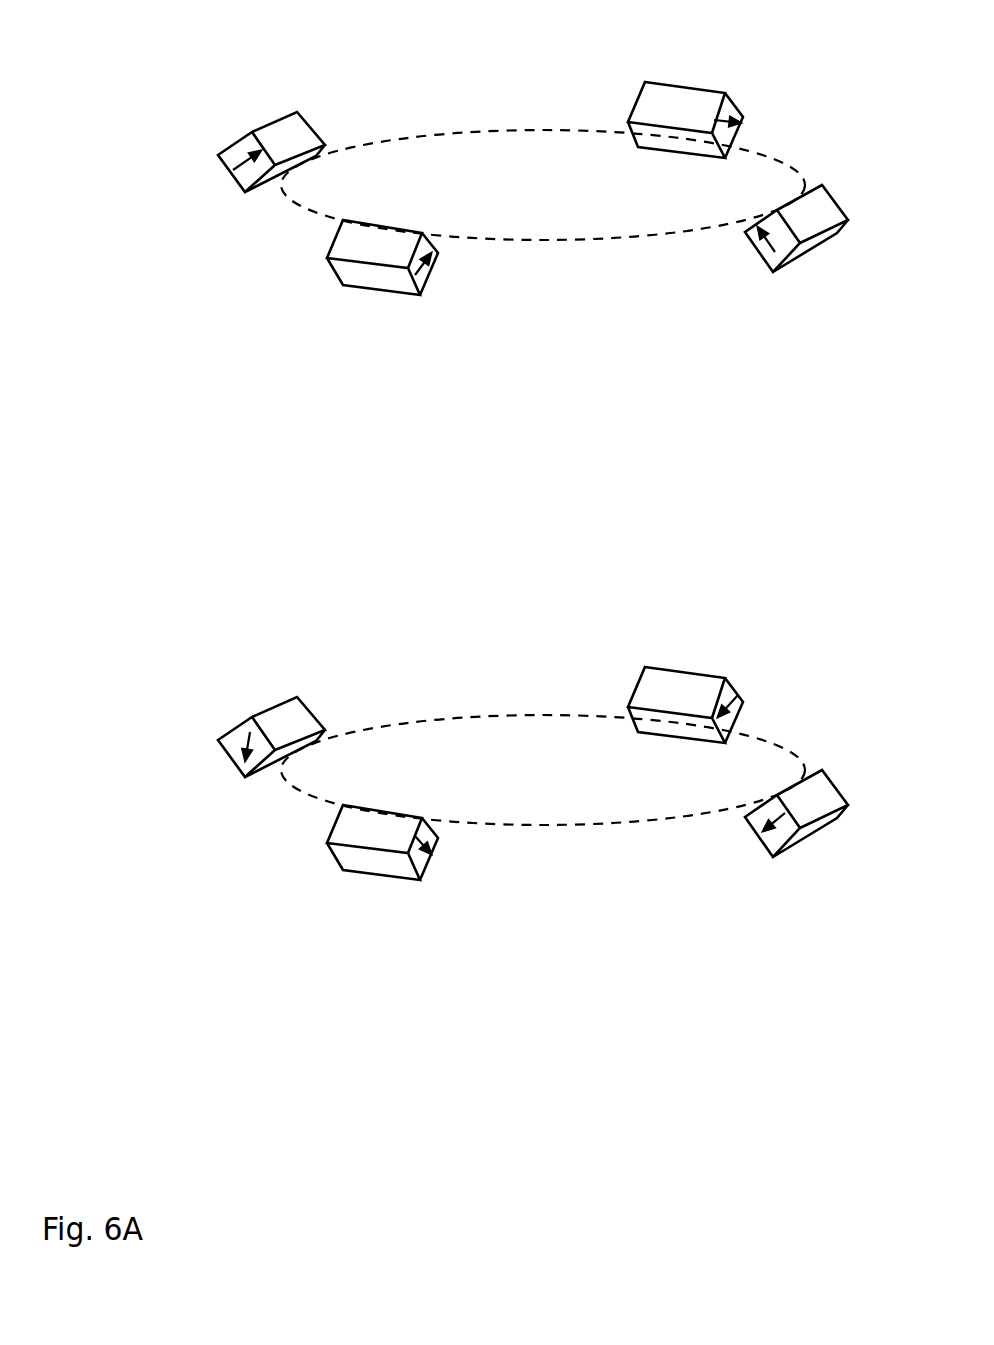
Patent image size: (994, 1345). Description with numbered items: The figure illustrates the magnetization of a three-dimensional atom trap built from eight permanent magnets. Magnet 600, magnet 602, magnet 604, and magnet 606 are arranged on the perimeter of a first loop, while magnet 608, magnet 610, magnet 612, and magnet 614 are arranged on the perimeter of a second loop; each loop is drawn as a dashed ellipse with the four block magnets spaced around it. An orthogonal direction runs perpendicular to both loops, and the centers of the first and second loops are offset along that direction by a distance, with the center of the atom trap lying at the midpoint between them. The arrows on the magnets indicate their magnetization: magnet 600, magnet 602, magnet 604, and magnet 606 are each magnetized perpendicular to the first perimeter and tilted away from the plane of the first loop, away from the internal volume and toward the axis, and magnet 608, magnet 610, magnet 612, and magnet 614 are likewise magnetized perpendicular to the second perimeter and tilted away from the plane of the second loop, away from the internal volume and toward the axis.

The magnet 600 is at (247, 113).
The magnet 602 is at (702, 75).
The magnet 604 is at (807, 267).
The magnet 606 is at (373, 303).
The magnet 608 is at (247, 698).
The magnet 610 is at (702, 660).
The magnet 612 is at (807, 852).
The magnet 614 is at (373, 888).